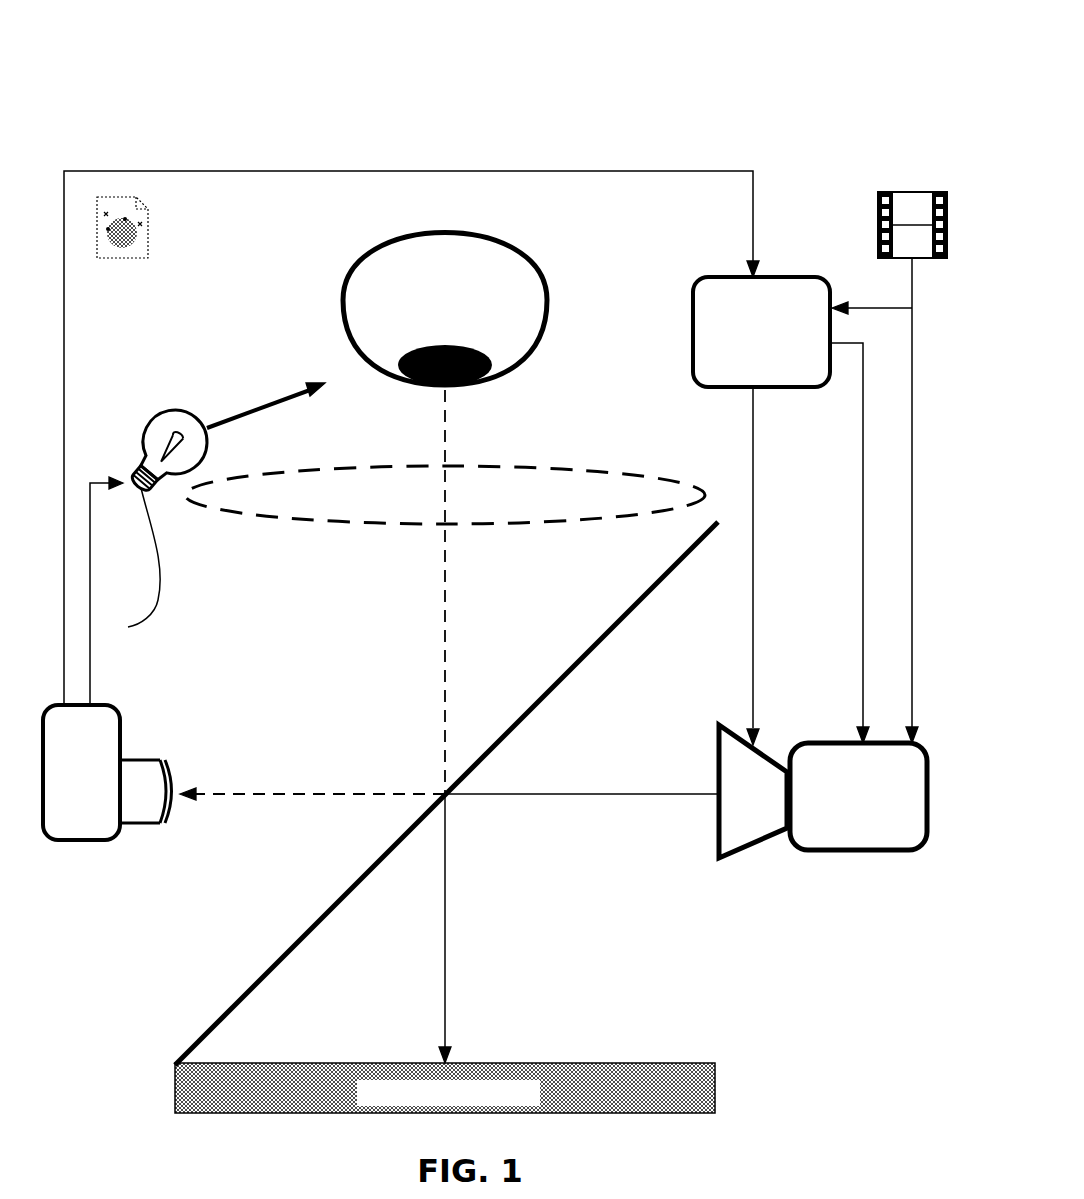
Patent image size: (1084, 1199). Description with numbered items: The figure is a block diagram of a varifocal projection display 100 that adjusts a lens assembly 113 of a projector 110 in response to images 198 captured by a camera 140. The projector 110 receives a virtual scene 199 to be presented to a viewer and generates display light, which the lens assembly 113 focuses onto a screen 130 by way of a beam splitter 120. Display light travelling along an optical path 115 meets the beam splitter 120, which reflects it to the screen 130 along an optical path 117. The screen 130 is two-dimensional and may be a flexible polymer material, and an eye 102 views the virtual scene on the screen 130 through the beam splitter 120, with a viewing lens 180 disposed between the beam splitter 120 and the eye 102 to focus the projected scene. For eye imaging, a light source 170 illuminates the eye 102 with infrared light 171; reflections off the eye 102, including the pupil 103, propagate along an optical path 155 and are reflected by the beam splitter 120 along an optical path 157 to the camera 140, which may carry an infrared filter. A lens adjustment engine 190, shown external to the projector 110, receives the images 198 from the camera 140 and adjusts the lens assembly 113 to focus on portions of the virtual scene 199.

The varifocal projection display 100 is at (832, 78).
The images 198 is at (150, 236).
The eye 102 is at (365, 245).
The pupil 103 is at (434, 325).
The virtual scene 199 is at (912, 190).
The lens adjustment engine 190 is at (742, 372).
The infrared light 171 is at (254, 411).
The viewing lens 180 is at (321, 528).
The light source 170 is at (186, 530).
The beam splitter 120 is at (628, 608).
The optical path 155 is at (448, 680).
The optical path 157 is at (275, 793).
The camera 140 is at (149, 826).
The optical path 115 is at (553, 790).
The optical path 117 is at (447, 948).
The projector 110 is at (860, 874).
The lens assembly 113 is at (743, 852).
The screen 130 is at (384, 1102).